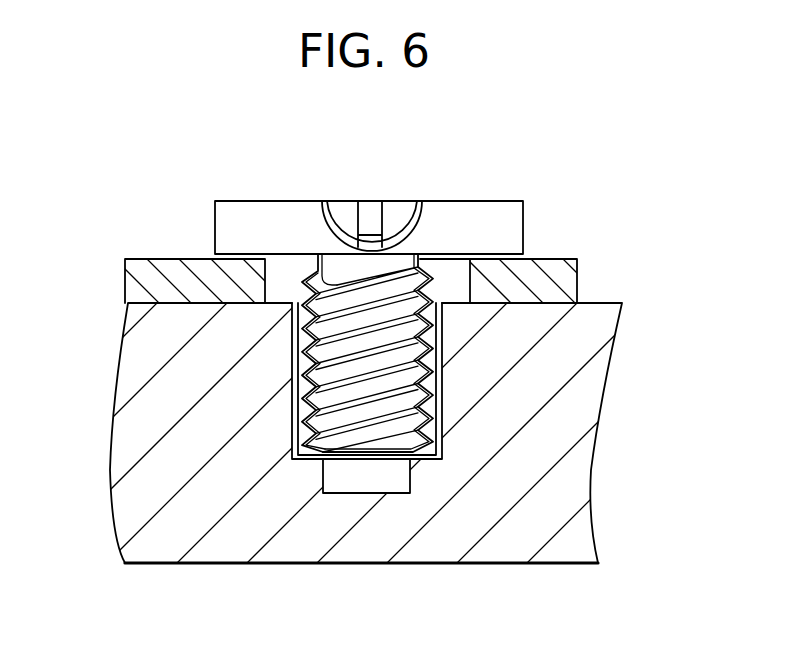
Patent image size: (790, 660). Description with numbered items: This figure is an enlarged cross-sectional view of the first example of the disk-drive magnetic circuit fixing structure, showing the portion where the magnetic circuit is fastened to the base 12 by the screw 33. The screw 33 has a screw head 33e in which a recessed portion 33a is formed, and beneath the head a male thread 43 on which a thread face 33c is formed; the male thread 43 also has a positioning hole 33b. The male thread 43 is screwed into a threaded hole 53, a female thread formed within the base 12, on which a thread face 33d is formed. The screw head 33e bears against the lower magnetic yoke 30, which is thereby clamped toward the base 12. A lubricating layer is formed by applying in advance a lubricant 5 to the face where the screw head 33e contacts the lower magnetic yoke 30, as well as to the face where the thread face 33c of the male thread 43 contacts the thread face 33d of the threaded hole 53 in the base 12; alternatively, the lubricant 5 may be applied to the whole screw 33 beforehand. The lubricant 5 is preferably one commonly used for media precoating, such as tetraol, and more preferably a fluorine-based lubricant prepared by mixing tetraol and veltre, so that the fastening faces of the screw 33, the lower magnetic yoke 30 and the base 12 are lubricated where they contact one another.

The lubricant 5 is at (257, 257).
The base 12 is at (545, 381).
The lower magnetic yoke 30 is at (158, 286).
The screw 33 is at (418, 359).
The recessed portion 33a is at (368, 220).
The positioning hole 33b is at (380, 477).
The thread face 33c is at (338, 285).
The thread face 33d is at (291, 340).
The screw head 33e is at (472, 227).
The male thread 43 is at (370, 378).
The threaded hole 53 is at (437, 369).